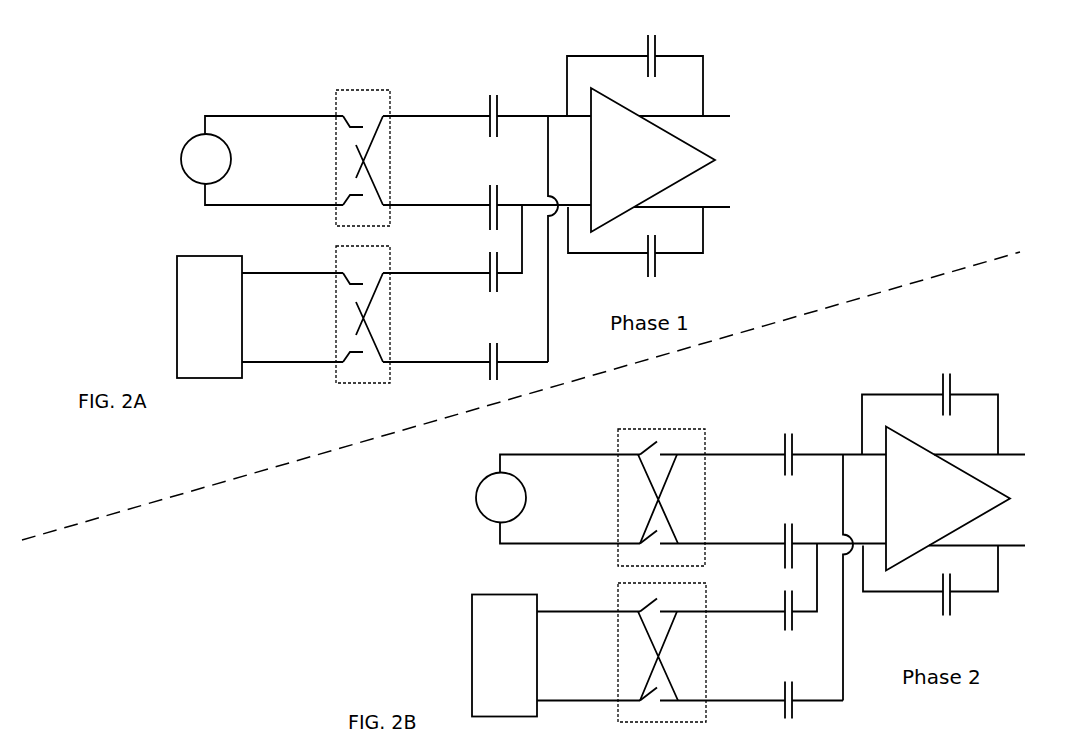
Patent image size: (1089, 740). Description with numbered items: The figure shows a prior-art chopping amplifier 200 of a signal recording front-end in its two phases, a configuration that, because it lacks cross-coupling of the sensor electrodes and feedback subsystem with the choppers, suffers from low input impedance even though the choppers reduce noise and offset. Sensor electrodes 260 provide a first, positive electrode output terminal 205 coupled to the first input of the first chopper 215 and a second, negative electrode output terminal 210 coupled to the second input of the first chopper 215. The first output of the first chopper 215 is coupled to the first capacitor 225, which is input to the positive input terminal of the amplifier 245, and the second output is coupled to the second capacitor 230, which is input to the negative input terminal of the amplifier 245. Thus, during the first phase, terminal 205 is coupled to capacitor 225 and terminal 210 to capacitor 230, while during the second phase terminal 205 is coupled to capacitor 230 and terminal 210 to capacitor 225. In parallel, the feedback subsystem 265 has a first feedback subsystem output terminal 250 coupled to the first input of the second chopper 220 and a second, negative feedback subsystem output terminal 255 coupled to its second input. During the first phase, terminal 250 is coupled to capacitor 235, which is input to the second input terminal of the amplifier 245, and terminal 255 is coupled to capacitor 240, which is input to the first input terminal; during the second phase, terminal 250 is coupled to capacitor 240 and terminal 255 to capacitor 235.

In FIG. 2A, the chopping amplifier 200 is at (78, 66).
In FIG. 2A, the first electrode output terminal 205 is at (204, 126).
In FIG. 2B, the first electrode output terminal 205 is at (552, 453).
In FIG. 2A, the second electrode output terminal 210 is at (206, 206).
In FIG. 2B, the second electrode output terminal 210 is at (557, 548).
In FIG. 2A, the first chopper 215 is at (339, 90).
In FIG. 2B, the first chopper 215 is at (661, 480).
In FIG. 2A, the second chopper 220 is at (366, 384).
In FIG. 2B, the second chopper 220 is at (662, 661).
In FIG. 2A, the first capacitor 225 is at (480, 98).
In FIG. 2B, the first capacitor 225 is at (782, 439).
In FIG. 2A, the second capacitor 230 is at (480, 192).
In FIG. 2B, the second capacitor 230 is at (782, 534).
In FIG. 2A, the capacitor 235 is at (497, 290).
In FIG. 2B, the capacitor 235 is at (751, 600).
In FIG. 2A, the capacitor 240 is at (483, 350).
In FIG. 2B, the capacitor 240 is at (760, 687).
In FIG. 2A, the amplifier 245 is at (686, 138).
In FIG. 2B, the amplifier 245 is at (950, 495).
In FIG. 2A, the first feedback subsystem output terminal 250 is at (264, 270).
In FIG. 2B, the first feedback subsystem output terminal 250 is at (588, 590).
In FIG. 2A, the second feedback subsystem output terminal 255 is at (264, 360).
In FIG. 2B, the second feedback subsystem output terminal 255 is at (588, 679).
In FIG. 2A, the sensor electrodes 260 is at (181, 159).
In FIG. 2B, the sensor electrodes 260 is at (479, 498).
In FIG. 2A, the feedback subsystem 265 is at (178, 301).
In FIG. 2B, the feedback subsystem 265 is at (482, 656).